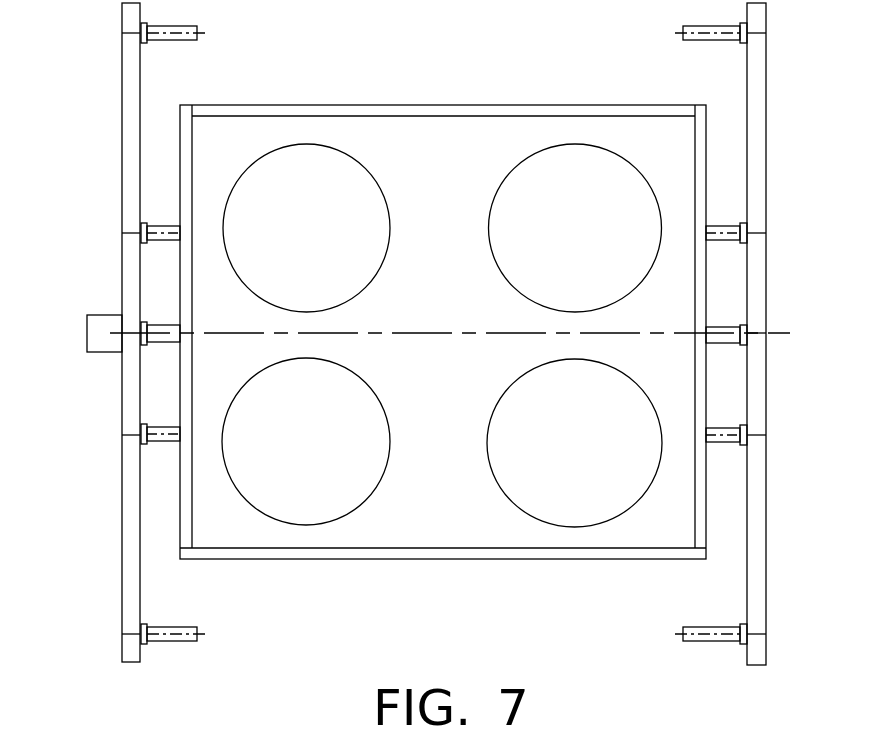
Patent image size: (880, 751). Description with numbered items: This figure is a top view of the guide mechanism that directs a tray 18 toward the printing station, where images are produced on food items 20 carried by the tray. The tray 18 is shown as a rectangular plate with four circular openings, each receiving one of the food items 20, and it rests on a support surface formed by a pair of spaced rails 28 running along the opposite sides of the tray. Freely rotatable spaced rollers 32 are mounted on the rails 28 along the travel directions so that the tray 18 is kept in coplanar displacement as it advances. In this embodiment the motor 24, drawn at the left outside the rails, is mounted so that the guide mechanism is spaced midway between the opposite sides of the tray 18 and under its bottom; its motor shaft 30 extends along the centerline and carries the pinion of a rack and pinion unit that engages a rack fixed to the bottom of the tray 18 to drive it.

The tray 18 is at (444, 163).
The food items 20 is at (315, 237).
The motor 24 is at (105, 345).
The spaced rails 28 is at (128, 150).
The motor shaft 30 is at (158, 322).
The rollers 32 is at (155, 442).